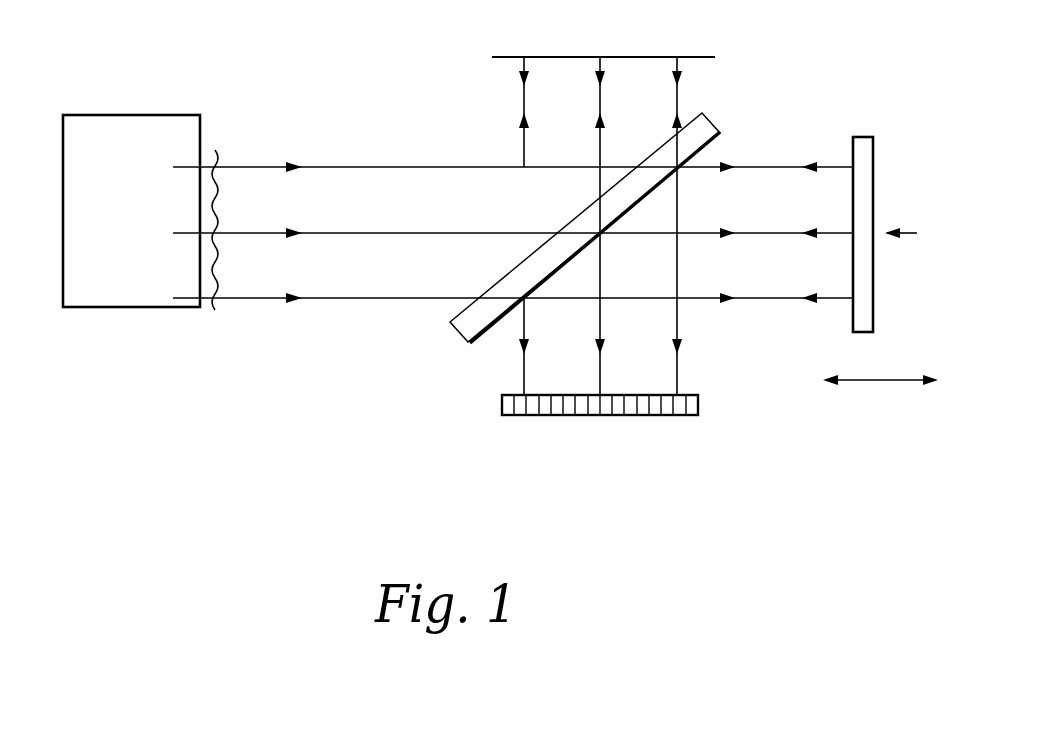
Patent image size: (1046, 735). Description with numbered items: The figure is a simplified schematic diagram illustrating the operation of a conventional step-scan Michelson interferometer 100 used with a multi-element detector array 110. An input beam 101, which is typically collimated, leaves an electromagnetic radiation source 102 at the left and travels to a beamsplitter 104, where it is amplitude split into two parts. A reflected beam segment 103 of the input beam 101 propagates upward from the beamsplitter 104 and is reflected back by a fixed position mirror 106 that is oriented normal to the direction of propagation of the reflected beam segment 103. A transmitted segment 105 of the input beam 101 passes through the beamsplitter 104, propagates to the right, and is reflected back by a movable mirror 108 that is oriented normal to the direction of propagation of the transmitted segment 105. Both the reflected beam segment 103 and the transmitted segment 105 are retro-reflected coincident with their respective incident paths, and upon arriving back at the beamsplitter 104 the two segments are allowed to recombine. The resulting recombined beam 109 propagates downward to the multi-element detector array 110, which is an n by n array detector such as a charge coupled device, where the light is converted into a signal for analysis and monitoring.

The step-scan Michelson interferometer 100 is at (363, 86).
The input beam 101 is at (347, 311).
The electromagnetic radiation source 102 is at (127, 113).
The reflected beam segment 103 is at (507, 124).
The beamsplitter 104 is at (722, 132).
The transmitted segment 105 is at (804, 312).
The fixed position mirror 106 is at (503, 58).
The movable mirror 108 is at (860, 137).
The recombined beam 109 is at (697, 368).
The multi-element detector array 110 is at (526, 437).